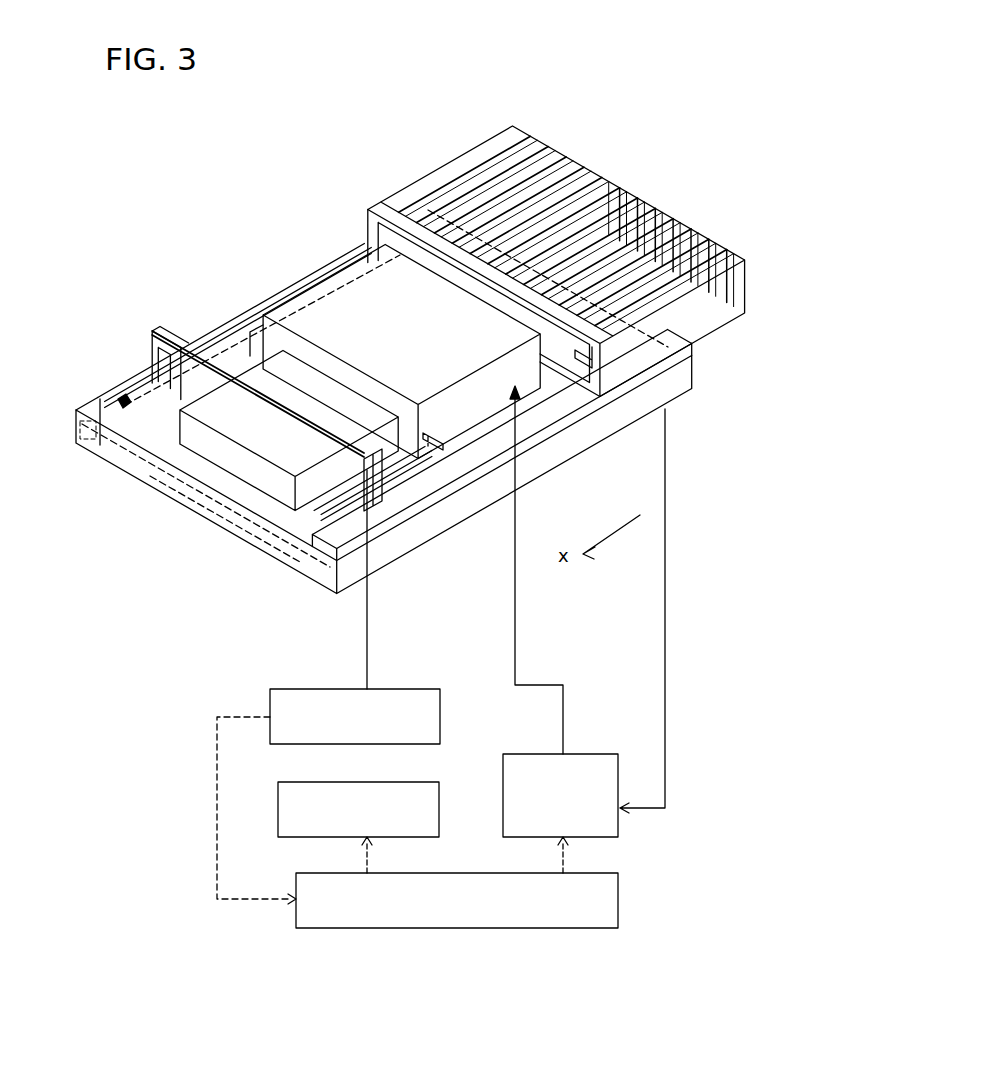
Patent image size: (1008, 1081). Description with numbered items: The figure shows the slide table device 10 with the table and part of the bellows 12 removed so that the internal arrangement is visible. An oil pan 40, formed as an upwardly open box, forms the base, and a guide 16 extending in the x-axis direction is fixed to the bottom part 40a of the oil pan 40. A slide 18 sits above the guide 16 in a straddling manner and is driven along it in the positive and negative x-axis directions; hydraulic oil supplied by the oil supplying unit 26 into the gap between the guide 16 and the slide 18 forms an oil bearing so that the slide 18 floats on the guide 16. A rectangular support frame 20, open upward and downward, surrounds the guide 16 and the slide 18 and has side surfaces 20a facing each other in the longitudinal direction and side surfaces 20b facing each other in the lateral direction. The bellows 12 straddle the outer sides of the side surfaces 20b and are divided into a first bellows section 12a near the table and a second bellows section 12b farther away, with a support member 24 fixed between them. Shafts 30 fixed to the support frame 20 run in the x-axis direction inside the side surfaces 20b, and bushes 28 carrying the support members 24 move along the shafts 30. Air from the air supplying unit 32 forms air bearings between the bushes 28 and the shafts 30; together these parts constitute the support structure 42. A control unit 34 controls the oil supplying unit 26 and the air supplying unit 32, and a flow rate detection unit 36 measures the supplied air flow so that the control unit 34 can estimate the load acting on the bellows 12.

The slide table device 10 is at (326, 176).
The bellows 12 is at (447, 107).
The first bellows section 12a is at (405, 200).
The second bellows section 12b is at (497, 136).
The guide 16 is at (214, 345).
The slide 18 is at (356, 307).
The support frame 20 is at (128, 464).
The side surface 20a is at (207, 495).
The side surface 20b is at (256, 345).
The support member 24 is at (397, 490).
The oil supplying unit 26 is at (595, 753).
The bush 28 is at (153, 368).
The shaft 30 is at (217, 347).
The air supplying unit 32 is at (422, 781).
The control unit 34 is at (618, 901).
The flow rate detection unit 36 is at (413, 688).
The oil pan 40 is at (84, 409).
The bottom part 40a is at (345, 544).
The support structure 42 is at (397, 487).